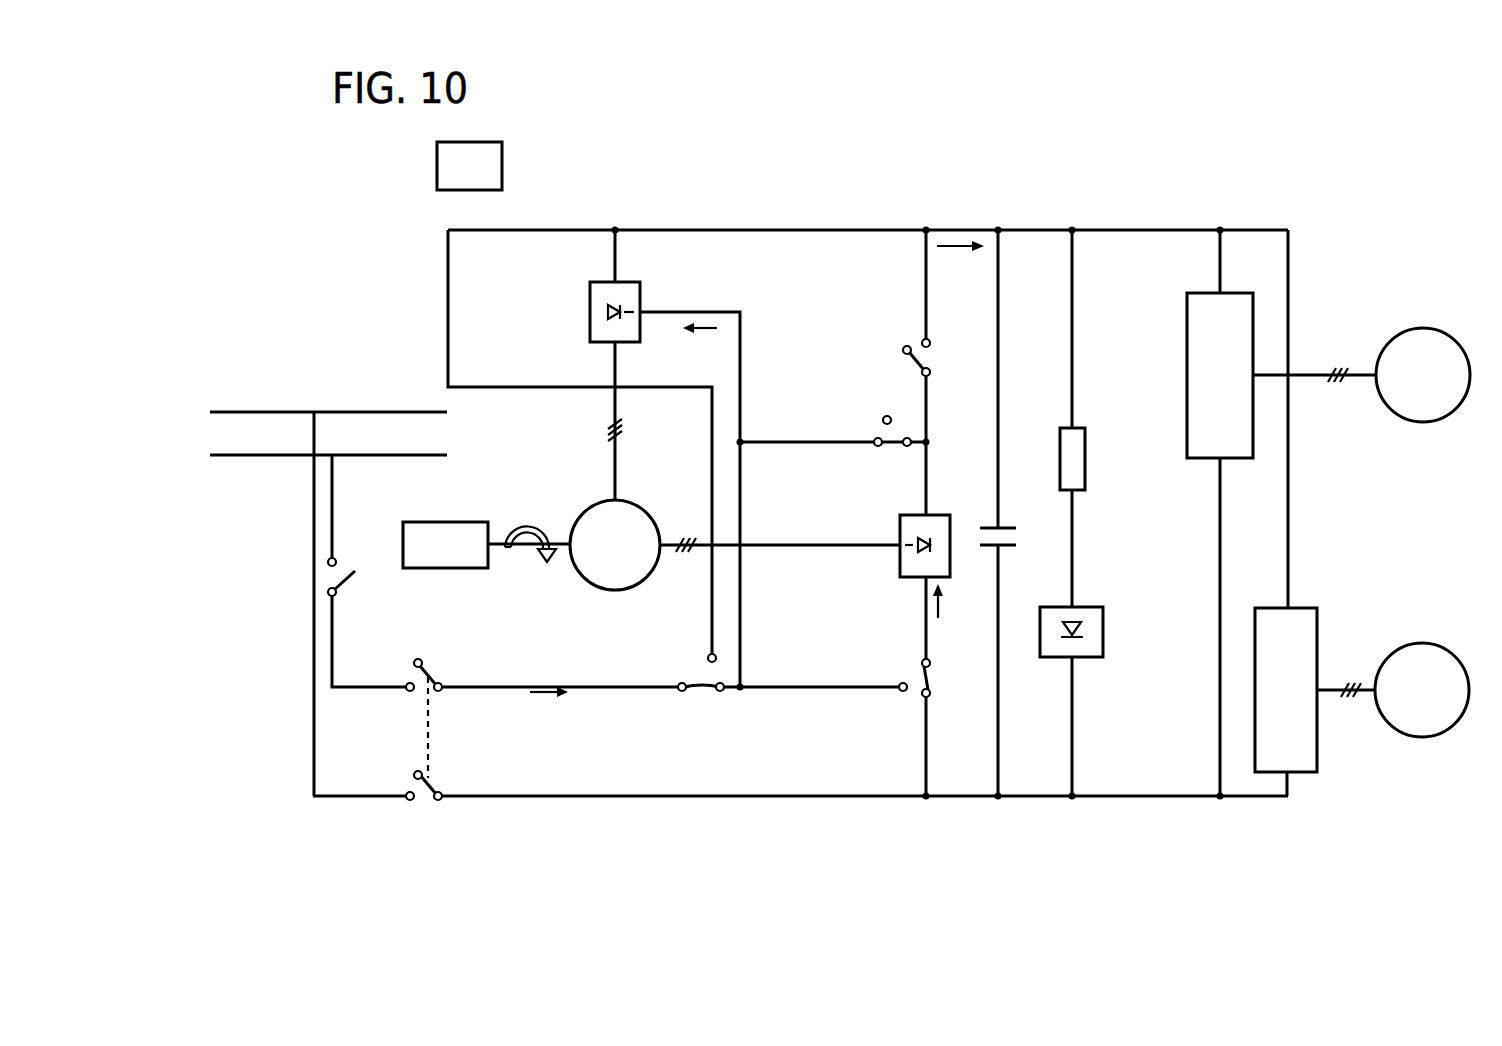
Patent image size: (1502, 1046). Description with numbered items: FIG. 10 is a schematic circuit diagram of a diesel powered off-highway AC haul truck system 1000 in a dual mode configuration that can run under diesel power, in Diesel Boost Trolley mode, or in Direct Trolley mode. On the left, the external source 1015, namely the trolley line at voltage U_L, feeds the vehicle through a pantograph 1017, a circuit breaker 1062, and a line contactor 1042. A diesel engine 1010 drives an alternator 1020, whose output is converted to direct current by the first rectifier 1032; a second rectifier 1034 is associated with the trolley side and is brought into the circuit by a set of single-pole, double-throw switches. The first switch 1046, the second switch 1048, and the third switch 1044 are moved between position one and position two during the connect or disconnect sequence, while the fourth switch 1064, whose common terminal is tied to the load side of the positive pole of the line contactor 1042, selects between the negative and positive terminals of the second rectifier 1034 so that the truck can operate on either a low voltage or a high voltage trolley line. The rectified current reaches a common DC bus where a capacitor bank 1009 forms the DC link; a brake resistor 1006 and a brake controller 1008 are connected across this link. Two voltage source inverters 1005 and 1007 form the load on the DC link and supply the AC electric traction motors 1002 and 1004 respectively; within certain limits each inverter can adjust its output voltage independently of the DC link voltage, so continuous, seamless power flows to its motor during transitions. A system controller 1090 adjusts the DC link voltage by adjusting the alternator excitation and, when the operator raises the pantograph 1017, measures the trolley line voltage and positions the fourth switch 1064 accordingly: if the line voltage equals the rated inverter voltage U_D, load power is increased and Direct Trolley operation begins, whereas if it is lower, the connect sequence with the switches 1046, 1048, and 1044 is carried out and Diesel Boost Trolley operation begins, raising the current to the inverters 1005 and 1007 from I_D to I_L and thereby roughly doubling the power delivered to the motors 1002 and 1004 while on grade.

The haul truck system 1000 is at (300, 224).
The system controller 1090 is at (504, 164).
The external source 1015 is at (292, 373).
The pantograph 1017 is at (232, 495).
The circuit breaker 1062 is at (340, 562).
The line contactor 1042 is at (430, 672).
The diesel engine 1010 is at (448, 522).
The alternator 1020 is at (630, 506).
The rectifier 2 1034 is at (642, 302).
The switch S4 1064 is at (720, 695).
The switch S1 1046 is at (916, 338).
The switch S2 1048 is at (876, 416).
The rectifier 1 1032 is at (900, 567).
The switch S3 1044 is at (912, 660).
The capacitor bank 1009 is at (1008, 520).
The brake resistor 1006 is at (1085, 458).
The brake controller 1008 is at (1088, 607).
The voltage source inverter 1005 is at (1183, 375).
The AC electric traction motor 1002 is at (1455, 345).
The voltage source inverter 1007 is at (1320, 740).
The AC electric traction motor 1004 is at (1454, 657).